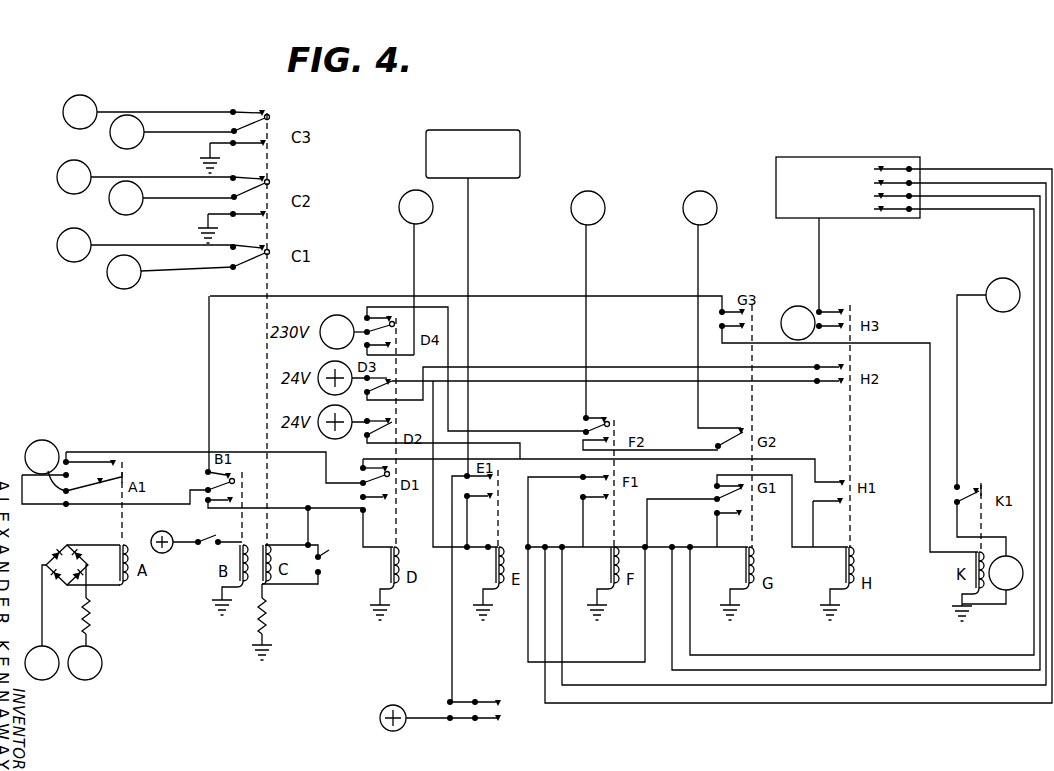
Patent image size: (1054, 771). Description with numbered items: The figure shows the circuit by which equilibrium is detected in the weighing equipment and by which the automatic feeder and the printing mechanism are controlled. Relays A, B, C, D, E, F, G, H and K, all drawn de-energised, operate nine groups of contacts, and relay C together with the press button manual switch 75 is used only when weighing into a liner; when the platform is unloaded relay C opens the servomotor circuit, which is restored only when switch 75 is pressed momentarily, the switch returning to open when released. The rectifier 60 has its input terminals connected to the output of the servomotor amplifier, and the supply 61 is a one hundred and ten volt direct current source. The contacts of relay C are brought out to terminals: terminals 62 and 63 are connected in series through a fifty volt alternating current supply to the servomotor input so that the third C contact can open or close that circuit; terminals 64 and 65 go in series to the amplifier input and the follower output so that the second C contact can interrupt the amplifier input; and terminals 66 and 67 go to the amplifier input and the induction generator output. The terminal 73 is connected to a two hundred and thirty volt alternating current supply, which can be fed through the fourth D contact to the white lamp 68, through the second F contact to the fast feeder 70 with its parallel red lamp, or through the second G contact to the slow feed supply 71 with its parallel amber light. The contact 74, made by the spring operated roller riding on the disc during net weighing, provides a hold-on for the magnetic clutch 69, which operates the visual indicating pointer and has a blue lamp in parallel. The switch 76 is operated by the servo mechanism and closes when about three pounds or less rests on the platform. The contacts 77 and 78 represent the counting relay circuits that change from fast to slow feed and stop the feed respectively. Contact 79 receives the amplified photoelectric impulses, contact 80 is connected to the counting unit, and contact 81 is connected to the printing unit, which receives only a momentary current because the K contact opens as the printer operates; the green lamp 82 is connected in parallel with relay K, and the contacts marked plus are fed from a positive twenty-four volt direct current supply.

The rectifier 60 is at (44, 568).
The 110 volt direct current supply 61 is at (48, 456).
The relay C contact terminal 62 is at (171, 272).
The relay C contact terminal 63 is at (159, 245).
The relay C contact terminal 64 is at (173, 198).
The relay C contact terminal 65 is at (159, 177).
The relay C contact terminal 66 is at (173, 132).
The relay C contact terminal 67 is at (162, 112).
The white lamp 68 is at (416, 272).
The magnetic clutch 69 is at (494, 132).
The fast feeder 70 is at (588, 304).
The slow feed supply 71 is at (712, 309).
The 230 volt alternating current terminal 73 is at (343, 332).
The roller contact 74 is at (457, 715).
The press button manual switch 75 is at (309, 569).
The servo-operated switch 76 is at (196, 548).
The counting relay contacts 77 is at (912, 168).
The counting relay contacts 78 is at (912, 214).
The impulse source contact 79 is at (798, 323).
The counting unit contact 80 is at (821, 157).
The printing unit contact 81 is at (988, 382).
The green lamp 82 is at (1006, 573).